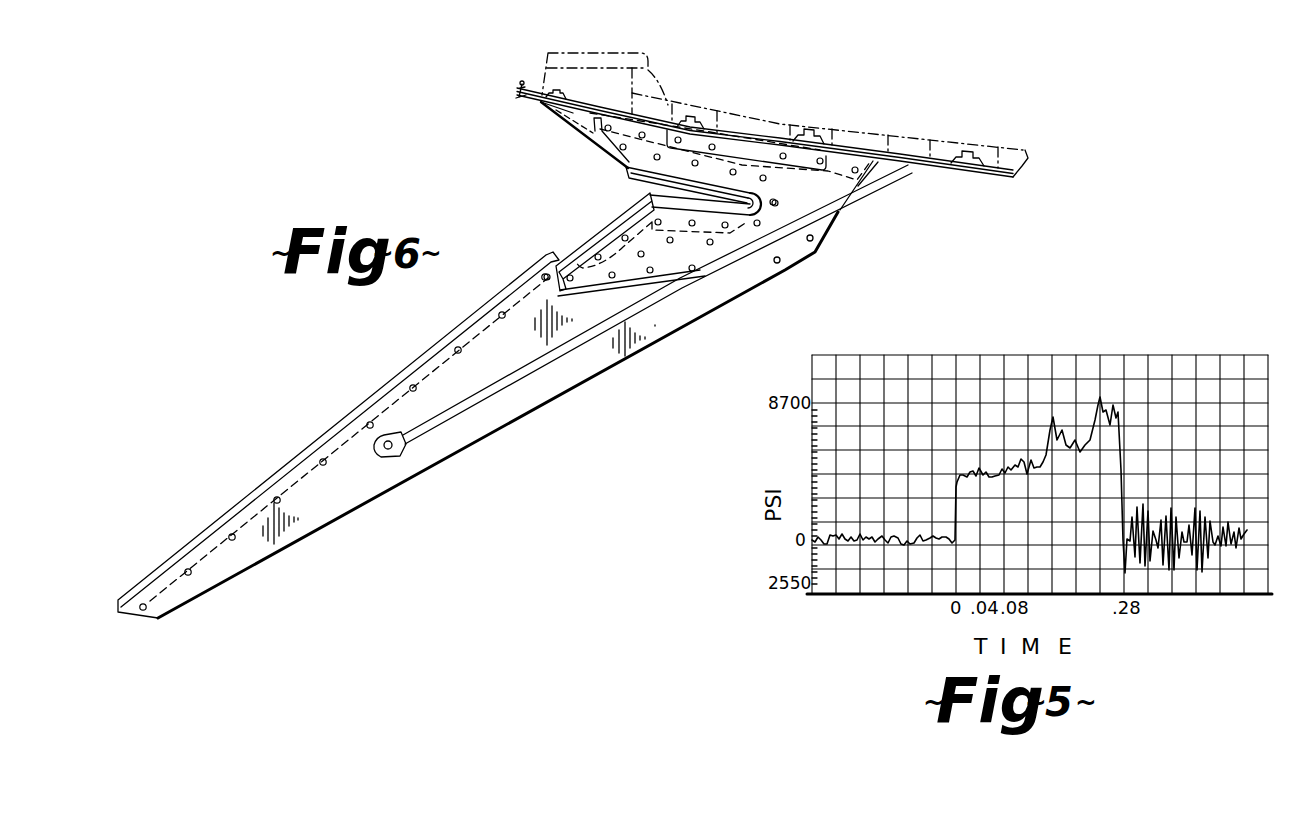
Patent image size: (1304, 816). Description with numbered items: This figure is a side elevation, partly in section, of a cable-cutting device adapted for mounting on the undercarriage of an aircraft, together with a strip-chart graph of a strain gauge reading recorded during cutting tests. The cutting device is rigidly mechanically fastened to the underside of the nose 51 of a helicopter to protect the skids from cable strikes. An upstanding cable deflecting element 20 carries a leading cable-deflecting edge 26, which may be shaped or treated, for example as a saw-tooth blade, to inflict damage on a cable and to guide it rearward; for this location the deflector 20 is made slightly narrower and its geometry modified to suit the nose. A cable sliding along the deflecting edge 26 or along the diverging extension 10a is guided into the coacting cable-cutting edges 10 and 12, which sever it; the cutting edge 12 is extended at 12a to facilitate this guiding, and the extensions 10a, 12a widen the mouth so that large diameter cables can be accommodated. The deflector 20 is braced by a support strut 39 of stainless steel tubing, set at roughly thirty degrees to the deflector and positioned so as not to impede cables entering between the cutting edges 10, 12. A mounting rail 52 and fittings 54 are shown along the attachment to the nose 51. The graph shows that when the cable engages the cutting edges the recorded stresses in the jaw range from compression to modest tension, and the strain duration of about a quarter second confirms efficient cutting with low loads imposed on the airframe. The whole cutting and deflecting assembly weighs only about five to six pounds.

The cutting edge 10 is at (648, 196).
The diverging extension 10a is at (593, 222).
The cutting edge 12 is at (638, 184).
The diverging extension 12a is at (626, 172).
The cable deflecting element 20 is at (388, 490).
The leading cable-deflecting edge 26 is at (392, 380).
The support strut 39 is at (468, 401).
The nose of helicopter 51 is at (535, 93).
The rail bracket 52 is at (757, 130).
The fittings 54 is at (698, 115).